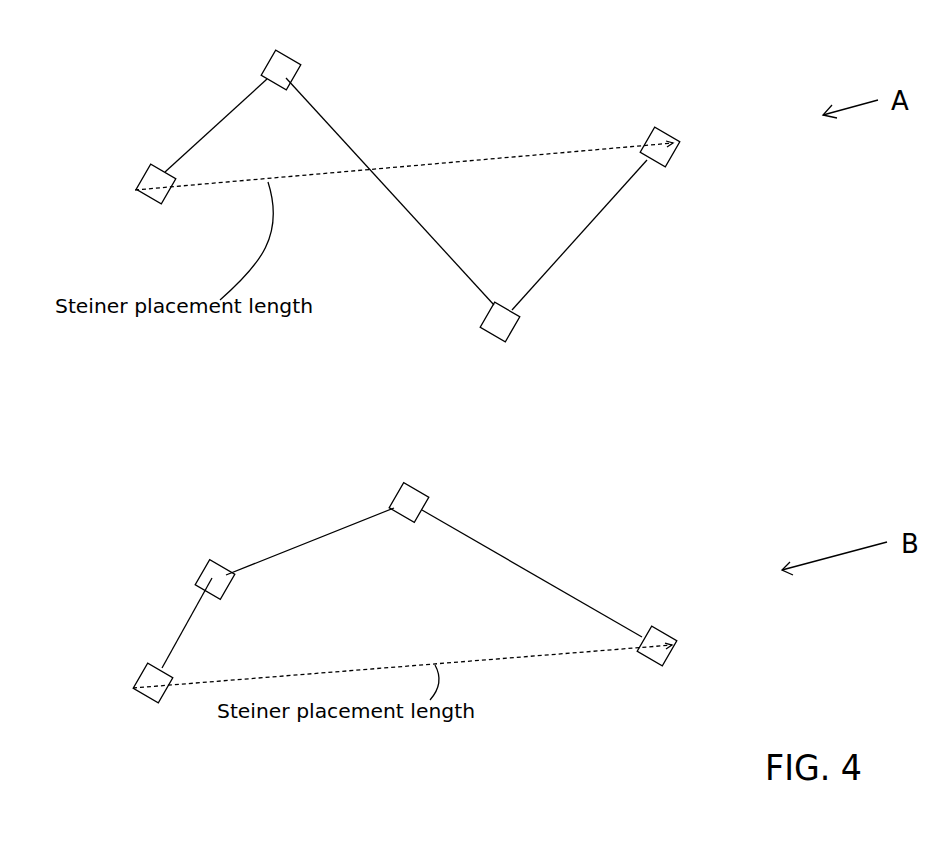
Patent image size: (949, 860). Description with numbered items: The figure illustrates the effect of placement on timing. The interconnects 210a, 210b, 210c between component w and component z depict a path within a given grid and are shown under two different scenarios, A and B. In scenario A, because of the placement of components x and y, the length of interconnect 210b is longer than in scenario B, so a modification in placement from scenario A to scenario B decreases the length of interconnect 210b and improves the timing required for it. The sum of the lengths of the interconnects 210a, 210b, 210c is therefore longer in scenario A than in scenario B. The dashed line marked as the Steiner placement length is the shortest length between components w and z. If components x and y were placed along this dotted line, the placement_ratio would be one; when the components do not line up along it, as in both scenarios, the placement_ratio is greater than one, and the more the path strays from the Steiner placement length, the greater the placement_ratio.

The interconnect 210a is at (233, 110).
The interconnect 210b is at (412, 98).
The interconnect 210c is at (577, 247).
The component w is at (137, 184).
The component x is at (285, 47).
The component y is at (498, 302).
The component z is at (673, 157).